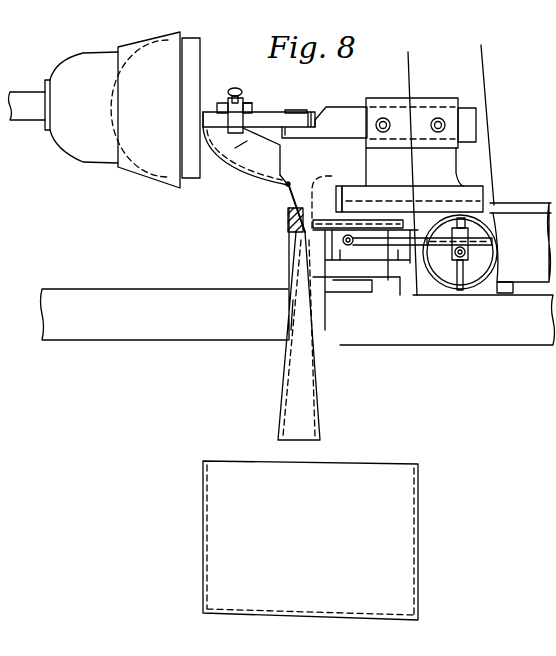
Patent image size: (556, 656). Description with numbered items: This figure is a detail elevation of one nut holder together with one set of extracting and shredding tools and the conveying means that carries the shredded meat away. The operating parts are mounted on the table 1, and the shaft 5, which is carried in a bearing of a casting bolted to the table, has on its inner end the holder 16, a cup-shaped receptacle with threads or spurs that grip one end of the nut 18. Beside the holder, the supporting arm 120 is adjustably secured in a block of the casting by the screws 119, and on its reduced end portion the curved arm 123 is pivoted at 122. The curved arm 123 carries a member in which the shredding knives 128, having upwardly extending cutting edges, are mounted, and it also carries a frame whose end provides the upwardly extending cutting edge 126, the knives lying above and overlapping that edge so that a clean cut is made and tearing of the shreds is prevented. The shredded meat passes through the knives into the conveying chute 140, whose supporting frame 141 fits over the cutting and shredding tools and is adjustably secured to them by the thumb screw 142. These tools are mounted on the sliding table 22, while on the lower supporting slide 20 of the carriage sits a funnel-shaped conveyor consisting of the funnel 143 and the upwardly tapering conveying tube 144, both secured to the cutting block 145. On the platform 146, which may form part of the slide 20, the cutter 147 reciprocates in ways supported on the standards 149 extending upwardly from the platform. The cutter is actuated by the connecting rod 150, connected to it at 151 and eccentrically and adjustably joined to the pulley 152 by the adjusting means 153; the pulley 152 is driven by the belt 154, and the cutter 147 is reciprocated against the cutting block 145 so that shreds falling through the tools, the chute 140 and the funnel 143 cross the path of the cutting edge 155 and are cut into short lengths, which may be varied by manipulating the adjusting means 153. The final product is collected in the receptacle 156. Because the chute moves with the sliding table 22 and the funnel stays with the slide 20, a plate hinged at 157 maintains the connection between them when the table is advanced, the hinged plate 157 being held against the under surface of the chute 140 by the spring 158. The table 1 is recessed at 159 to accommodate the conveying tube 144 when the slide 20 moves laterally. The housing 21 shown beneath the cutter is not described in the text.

The table 1 is at (150, 300).
The shaft 5 is at (25, 98).
The holder 16 is at (82, 60).
The nut 18 is at (190, 174).
The lower supporting slide 20 is at (528, 220).
The housing 21 is at (326, 332).
The sliding table 22 is at (458, 193).
The screws 119 is at (436, 118).
The supporting arm 120 is at (343, 112).
The pivot 122 is at (303, 115).
The curved arm 123 is at (280, 117).
The cutting edge 126 is at (207, 108).
The shredding knives 128 is at (214, 110).
The conveying chute 140 is at (236, 147).
The supporting frame 141 is at (245, 103).
The thumb screw 142 is at (241, 89).
The funnel 143 is at (295, 192).
The conveying tube 144 is at (303, 287).
The cutting block 145 is at (288, 220).
The platform 146 is at (418, 246).
The cutter 147 is at (338, 192).
The standards 149 is at (342, 255).
The connecting rod 150 is at (412, 272).
The connection 151 is at (384, 220).
The pulley 152 is at (497, 250).
The adjusting means 153 is at (493, 203).
The belt 154 is at (487, 116).
The cutting edge 155 is at (311, 200).
The receptacle 156 is at (260, 170).
The hinged plate 157 is at (280, 174).
The spring 158 is at (283, 180).
The recess 159 is at (287, 313).